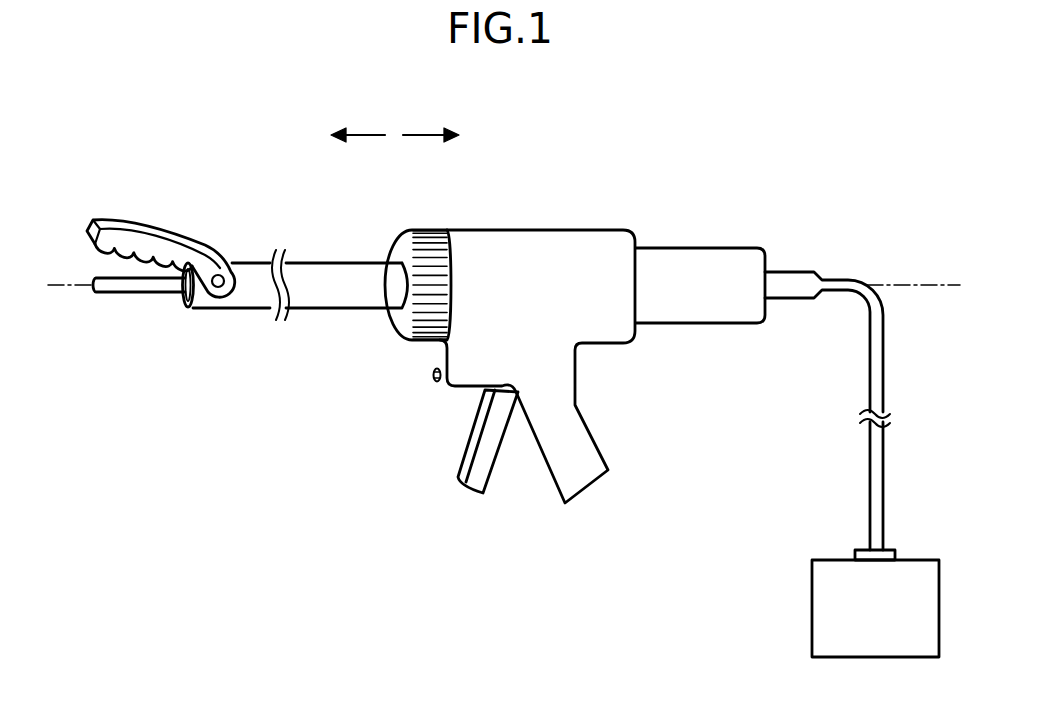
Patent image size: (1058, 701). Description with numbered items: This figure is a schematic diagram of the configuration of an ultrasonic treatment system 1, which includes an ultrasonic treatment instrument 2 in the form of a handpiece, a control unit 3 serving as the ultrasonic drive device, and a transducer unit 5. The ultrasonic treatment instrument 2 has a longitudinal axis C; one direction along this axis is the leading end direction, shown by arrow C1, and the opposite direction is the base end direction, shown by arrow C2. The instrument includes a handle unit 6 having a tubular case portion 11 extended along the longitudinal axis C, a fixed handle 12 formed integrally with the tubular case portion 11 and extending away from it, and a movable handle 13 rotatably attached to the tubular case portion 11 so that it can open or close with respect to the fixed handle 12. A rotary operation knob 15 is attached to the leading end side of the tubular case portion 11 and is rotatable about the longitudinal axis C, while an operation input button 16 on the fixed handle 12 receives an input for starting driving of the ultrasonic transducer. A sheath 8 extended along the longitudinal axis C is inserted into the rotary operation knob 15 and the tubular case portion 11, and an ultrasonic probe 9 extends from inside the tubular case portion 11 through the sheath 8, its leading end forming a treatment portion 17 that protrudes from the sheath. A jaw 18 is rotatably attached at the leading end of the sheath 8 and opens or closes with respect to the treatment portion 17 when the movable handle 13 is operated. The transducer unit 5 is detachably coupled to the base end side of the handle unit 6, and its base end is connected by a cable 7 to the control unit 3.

The ultrasonic treatment system 1 is at (888, 180).
The ultrasonic treatment instrument 2 is at (550, 326).
The control unit 3 is at (908, 558).
The transducer unit 5 is at (679, 265).
The handle unit 6 is at (560, 250).
The cable 7 is at (876, 334).
The sheath 8 is at (327, 297).
The ultrasonic probe 9 is at (165, 280).
The tubular case portion 11 is at (607, 330).
The fixed handle 12 is at (588, 447).
The movable handle 13 is at (483, 470).
The rotary operation knob 15 is at (423, 230).
The operation input button 16 is at (430, 378).
The treatment portion 17 is at (131, 294).
The jaw 18 is at (176, 230).
The longitudinal axis C is at (925, 283).
The arrow indicating leading end direction C1 is at (358, 124).
The arrow indicating base end direction C2 is at (431, 124).